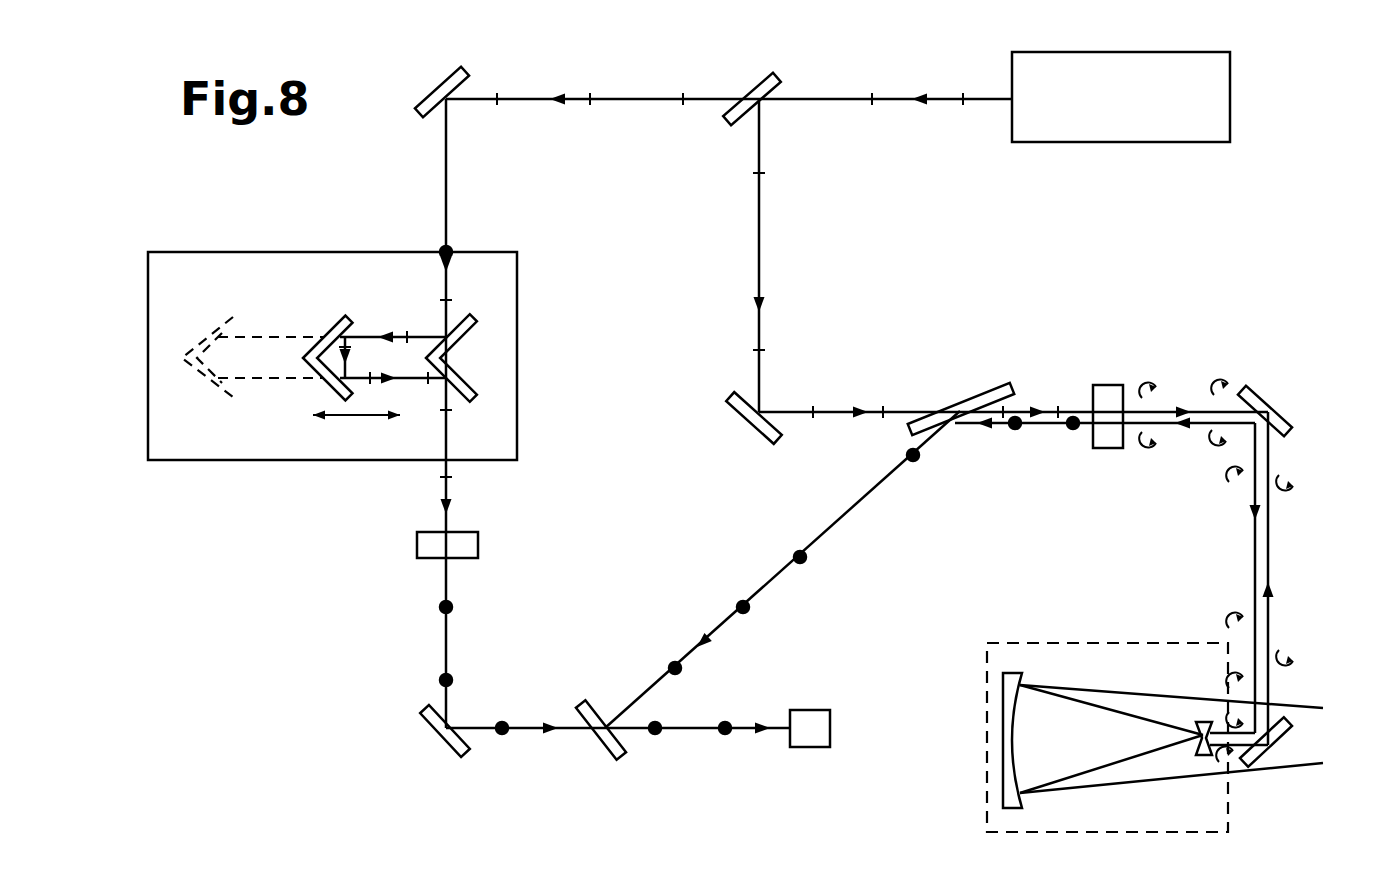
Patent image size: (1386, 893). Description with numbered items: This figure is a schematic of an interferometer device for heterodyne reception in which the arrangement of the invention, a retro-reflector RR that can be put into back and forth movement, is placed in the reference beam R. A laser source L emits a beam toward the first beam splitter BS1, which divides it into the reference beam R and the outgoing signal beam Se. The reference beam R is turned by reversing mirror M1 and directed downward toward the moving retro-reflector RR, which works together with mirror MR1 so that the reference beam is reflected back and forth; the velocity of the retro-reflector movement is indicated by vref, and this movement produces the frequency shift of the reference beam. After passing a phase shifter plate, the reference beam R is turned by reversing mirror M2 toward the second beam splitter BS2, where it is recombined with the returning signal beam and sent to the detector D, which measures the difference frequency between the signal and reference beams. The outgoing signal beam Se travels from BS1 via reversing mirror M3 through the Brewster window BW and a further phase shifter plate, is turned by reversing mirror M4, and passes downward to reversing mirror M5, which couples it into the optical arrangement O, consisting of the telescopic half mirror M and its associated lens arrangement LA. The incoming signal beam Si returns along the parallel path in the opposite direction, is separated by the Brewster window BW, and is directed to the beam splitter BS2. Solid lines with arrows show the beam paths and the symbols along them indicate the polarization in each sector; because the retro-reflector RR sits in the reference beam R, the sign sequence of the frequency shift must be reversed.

The laser source L is at (838, 97).
The reversing mirror M1 is at (436, 91).
The beam splitter BS1 is at (746, 96).
The reference beam R is at (440, 172).
The outgoing signal beam Se is at (766, 203).
The retro-reflector RR is at (333, 338).
The reversing mirror MR1 is at (462, 358).
The reference velocity vref is at (356, 426).
The reversing mirror M2 is at (437, 731).
The beam splitter BS2 is at (618, 746).
The detector D is at (810, 728).
The reversing mirror M3 is at (752, 421).
The Brewster window BW is at (1013, 408).
The reversing mirror M4 is at (1269, 411).
The incoming signal beam Si is at (808, 557).
The optical arrangement O is at (1155, 737).
The telescopic half mirror M is at (1012, 728).
The lens arrangement LA is at (1186, 727).
The reversing mirror M5 is at (1280, 742).